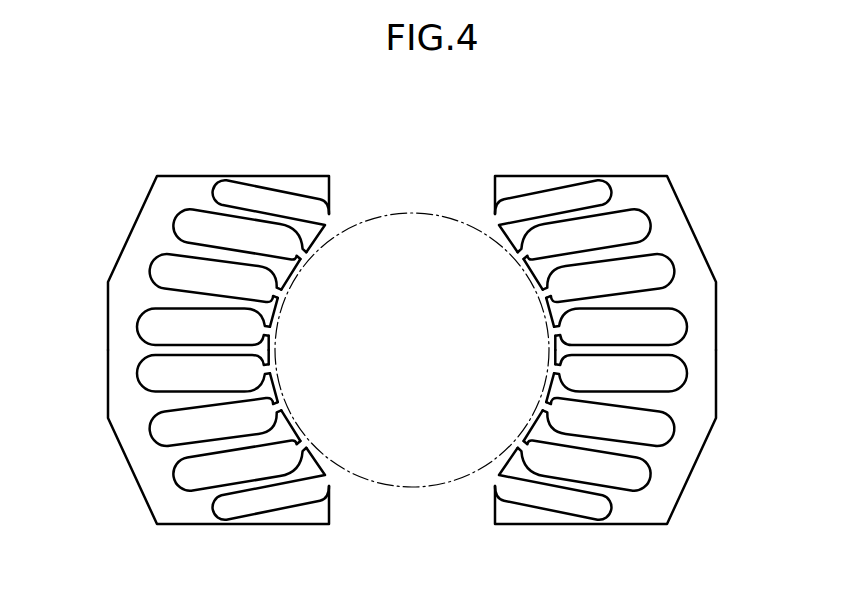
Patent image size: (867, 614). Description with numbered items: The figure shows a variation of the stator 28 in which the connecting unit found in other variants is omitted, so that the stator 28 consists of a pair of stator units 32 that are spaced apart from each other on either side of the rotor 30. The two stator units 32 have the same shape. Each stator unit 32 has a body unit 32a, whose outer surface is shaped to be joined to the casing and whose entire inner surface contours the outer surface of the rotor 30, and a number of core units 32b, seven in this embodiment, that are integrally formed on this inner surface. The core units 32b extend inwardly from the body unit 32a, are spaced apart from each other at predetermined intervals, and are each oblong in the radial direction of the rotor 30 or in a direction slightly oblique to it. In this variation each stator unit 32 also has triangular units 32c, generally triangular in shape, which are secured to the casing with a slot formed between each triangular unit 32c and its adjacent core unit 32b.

The stator 28 is at (411, 337).
The rotor 30 is at (434, 212).
The stator unit 32 is at (411, 352).
The body unit 32a is at (107, 340).
The core unit 32b is at (222, 482).
The triangular unit 32c is at (299, 177).